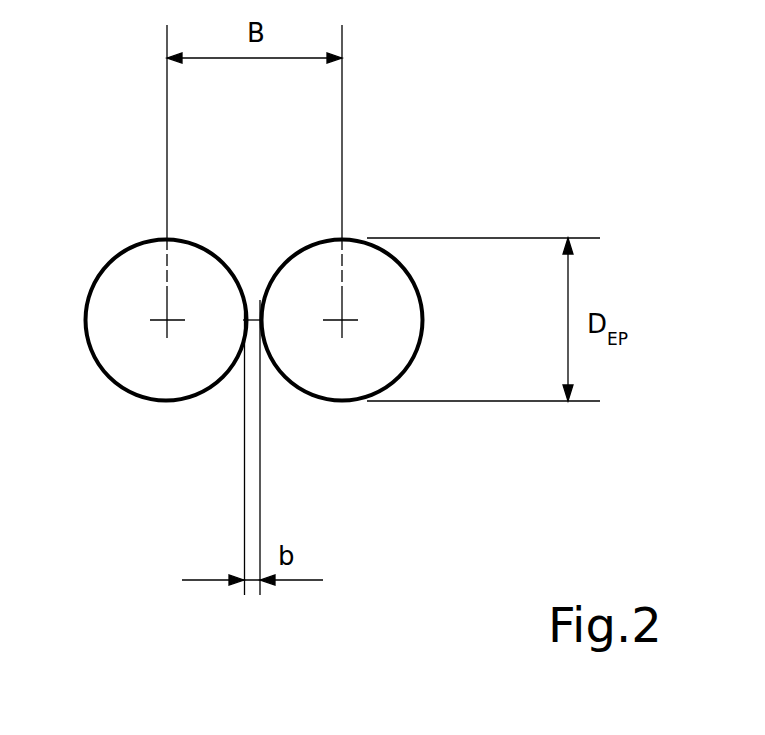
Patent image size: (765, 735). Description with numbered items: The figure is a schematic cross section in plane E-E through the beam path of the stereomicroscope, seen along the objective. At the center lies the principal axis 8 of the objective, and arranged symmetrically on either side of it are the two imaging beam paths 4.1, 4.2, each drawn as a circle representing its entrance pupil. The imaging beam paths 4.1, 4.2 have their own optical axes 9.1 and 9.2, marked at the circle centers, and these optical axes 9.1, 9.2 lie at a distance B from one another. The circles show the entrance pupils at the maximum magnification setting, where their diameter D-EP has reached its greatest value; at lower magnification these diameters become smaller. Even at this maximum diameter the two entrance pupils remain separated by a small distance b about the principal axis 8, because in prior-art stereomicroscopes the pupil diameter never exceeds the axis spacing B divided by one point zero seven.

The imaging beam path 4.1 is at (357, 242).
The imaging beam path 4.2 is at (127, 267).
The principal axis 8 is at (252, 317).
The optical axis 9.1 is at (345, 325).
The optical axis 9.2 is at (162, 324).